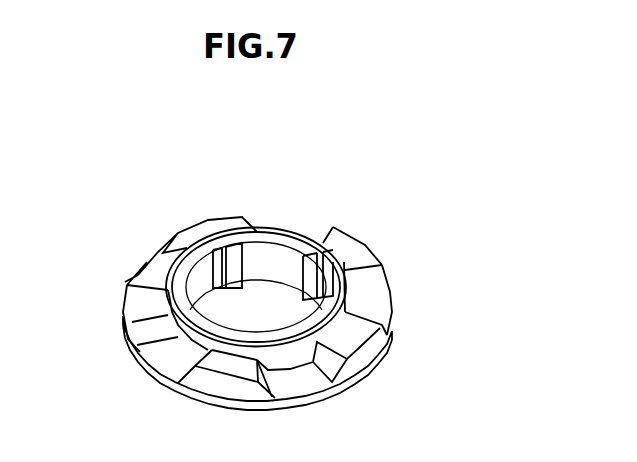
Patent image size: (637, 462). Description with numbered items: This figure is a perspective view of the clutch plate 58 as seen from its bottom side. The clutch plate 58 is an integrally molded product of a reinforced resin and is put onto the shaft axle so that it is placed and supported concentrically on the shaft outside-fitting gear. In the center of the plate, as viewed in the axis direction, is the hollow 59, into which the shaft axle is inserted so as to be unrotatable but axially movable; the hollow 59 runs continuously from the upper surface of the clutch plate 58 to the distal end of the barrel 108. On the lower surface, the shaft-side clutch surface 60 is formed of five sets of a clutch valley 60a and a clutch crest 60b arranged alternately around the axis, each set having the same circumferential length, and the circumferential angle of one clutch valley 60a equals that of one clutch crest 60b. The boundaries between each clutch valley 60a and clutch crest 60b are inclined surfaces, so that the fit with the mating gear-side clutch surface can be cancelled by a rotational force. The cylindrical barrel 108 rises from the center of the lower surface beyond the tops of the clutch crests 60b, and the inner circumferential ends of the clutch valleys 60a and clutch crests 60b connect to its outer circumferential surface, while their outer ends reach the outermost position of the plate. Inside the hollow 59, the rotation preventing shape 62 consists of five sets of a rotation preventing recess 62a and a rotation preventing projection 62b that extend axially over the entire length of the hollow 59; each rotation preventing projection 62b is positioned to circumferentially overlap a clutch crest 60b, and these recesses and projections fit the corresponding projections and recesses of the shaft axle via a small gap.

The clutch plate 58 is at (434, 174).
The hollow 59 is at (213, 302).
The shaft-side clutch surface 60 is at (327, 307).
The clutch valley 60a is at (367, 307).
The clutch crest 60b is at (347, 253).
The rotation preventing shape 62 is at (305, 203).
The rotation preventing recess 62a is at (273, 258).
The rotation preventing projection 62b is at (232, 263).
The barrel 108 is at (183, 343).